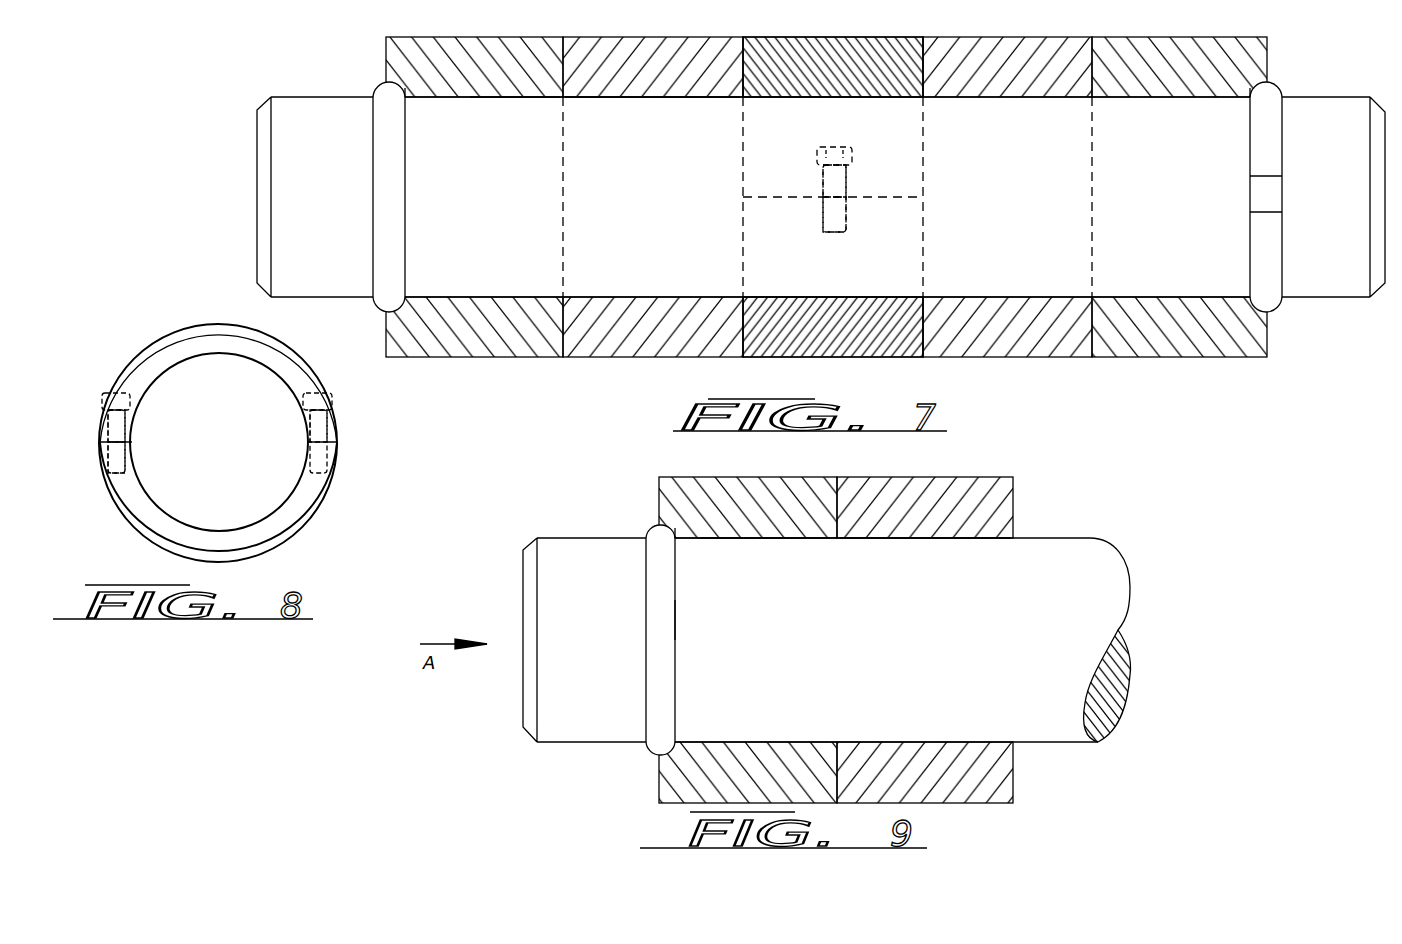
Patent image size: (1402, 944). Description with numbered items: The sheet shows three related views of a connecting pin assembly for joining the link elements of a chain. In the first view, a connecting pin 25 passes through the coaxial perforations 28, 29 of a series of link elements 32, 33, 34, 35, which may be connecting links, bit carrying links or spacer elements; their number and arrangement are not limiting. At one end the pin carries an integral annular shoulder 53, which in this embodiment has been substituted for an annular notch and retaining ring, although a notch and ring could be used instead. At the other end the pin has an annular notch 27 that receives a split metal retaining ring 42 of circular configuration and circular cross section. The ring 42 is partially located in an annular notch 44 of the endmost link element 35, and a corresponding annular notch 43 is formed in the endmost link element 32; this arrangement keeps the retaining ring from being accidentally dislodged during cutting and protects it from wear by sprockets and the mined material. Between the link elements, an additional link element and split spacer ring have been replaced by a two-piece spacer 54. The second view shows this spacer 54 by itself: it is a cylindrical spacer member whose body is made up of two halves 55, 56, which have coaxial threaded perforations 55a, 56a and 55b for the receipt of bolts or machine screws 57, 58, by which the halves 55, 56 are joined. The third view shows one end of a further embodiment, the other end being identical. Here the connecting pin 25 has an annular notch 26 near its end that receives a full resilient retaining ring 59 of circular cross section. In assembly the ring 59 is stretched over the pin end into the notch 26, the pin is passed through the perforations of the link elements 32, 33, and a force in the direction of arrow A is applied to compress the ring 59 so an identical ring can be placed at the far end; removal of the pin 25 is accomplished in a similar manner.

In FIG. 7, the connecting pin 25 is at (1016, 200).
In FIG. 9, the connecting pin 25 is at (873, 648).
In FIG. 9, the annular notch 26 is at (672, 618).
In FIG. 7, the annular notch 27 is at (1265, 190).
In FIG. 7, the coaxial perforation 28 is at (485, 97).
In FIG. 9, the coaxial perforation 28 is at (752, 538).
In FIG. 7, the coaxial perforation 29 is at (610, 97).
In FIG. 9, the coaxial perforation 29 is at (912, 538).
In FIG. 7, the link element 32 is at (490, 37).
In FIG. 9, the link element 32 is at (752, 477).
In FIG. 7, the link element 33 is at (640, 38).
In FIG. 9, the link element 33 is at (897, 485).
In FIG. 7, the link element 34 is at (1005, 37).
In FIG. 7, the link element 35 is at (1163, 37).
In FIG. 7, the split metal retaining ring 42 is at (1250, 152).
In FIG. 7, the annular notch 43 is at (405, 88).
In FIG. 9, the annular notch 43 is at (675, 528).
In FIG. 7, the annular notch 44 is at (1250, 88).
In FIG. 7, the integral annular shoulder 53 is at (398, 237).
In FIG. 7, the two-piece spacer 54 is at (793, 37).
In FIG. 8, the two-piece spacer 54 is at (300, 349).
In FIG. 7, the spacer body half 55 is at (872, 47).
In FIG. 8, the spacer body half 55 is at (153, 351).
In FIG. 7, the threaded perforation 55a is at (836, 181).
In FIG. 8, the threaded perforation 55a is at (108, 431).
In FIG. 8, the threaded perforation 55b is at (335, 427).
In FIG. 7, the spacer body half 56 is at (870, 343).
In FIG. 8, the spacer body half 56 is at (280, 527).
In FIG. 7, the threaded perforation 56a is at (836, 208).
In FIG. 8, the threaded perforation 56a is at (108, 460).
In FIG. 7, the machine screw 57 is at (840, 147).
In FIG. 8, the machine screw 57 is at (100, 398).
In FIG. 8, the machine screw 58 is at (330, 398).
In FIG. 9, the resilient retaining ring 59 is at (660, 663).